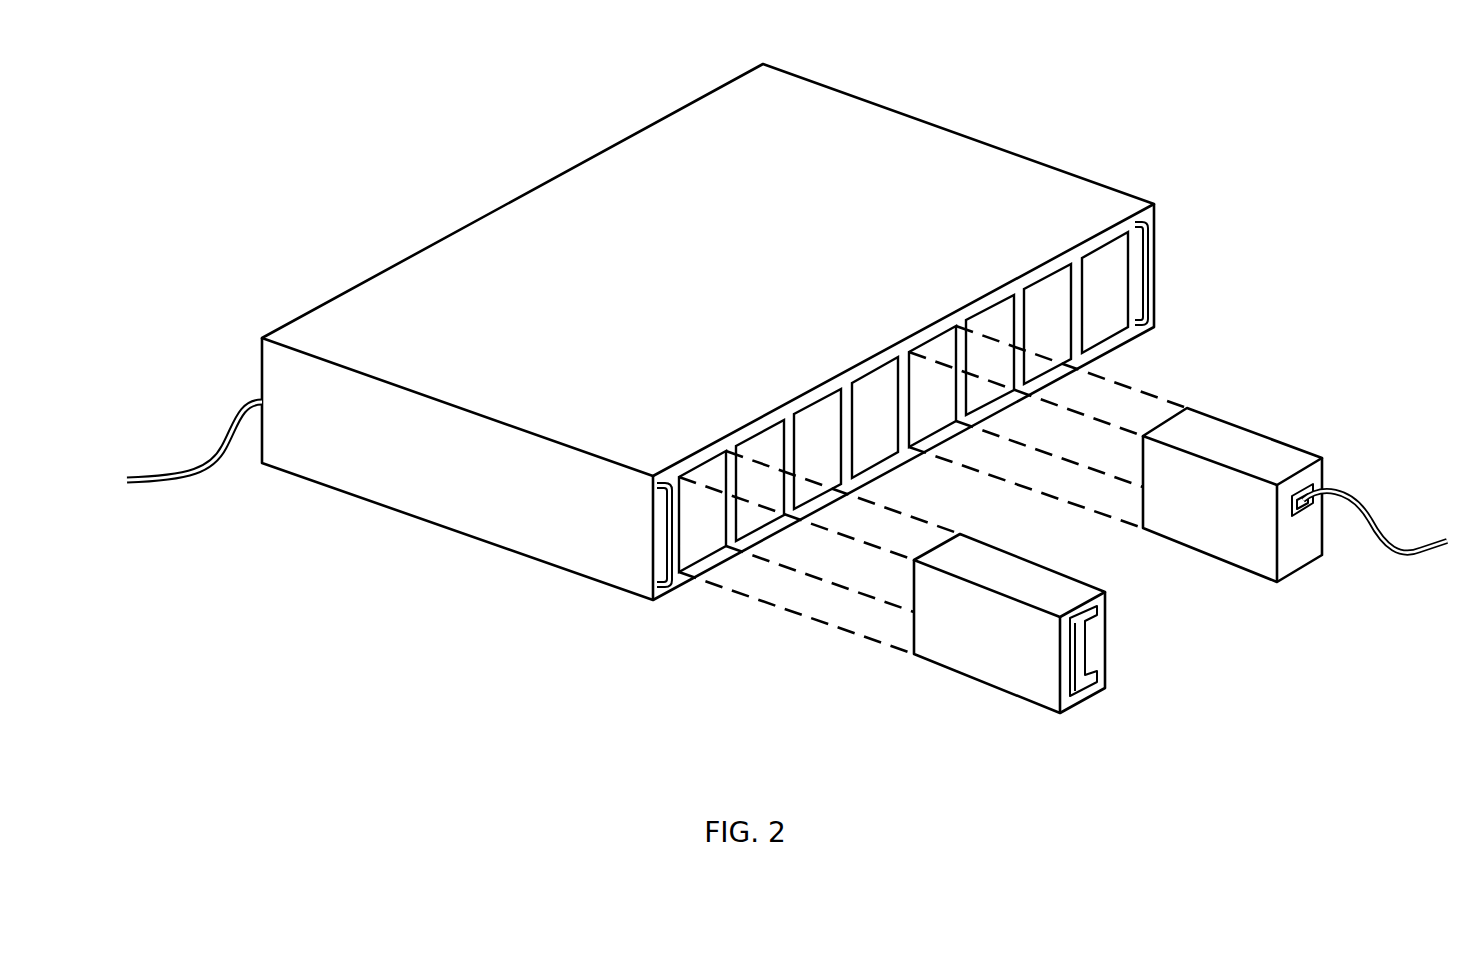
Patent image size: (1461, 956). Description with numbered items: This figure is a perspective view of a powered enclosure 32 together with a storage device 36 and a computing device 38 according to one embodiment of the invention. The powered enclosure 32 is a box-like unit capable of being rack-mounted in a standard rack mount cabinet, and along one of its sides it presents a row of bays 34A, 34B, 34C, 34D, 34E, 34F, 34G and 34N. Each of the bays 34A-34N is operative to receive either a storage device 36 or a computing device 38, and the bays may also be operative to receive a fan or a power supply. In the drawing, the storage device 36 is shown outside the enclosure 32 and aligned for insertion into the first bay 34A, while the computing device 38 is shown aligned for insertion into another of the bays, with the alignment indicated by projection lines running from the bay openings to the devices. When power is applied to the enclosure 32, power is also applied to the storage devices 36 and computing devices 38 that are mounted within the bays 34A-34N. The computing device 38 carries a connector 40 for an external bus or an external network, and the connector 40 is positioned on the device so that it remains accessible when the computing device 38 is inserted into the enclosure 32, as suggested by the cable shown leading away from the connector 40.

The powered enclosure 32 is at (882, 104).
The bay 34A is at (701, 460).
The bay 34B is at (777, 416).
The bay 34C is at (833, 384).
The bay 34D is at (891, 354).
The bay 34E is at (948, 321).
The bay 34F is at (1002, 292).
The bay 34G is at (1055, 264).
The bay 34N is at (1113, 237).
The storage device 36 is at (977, 683).
The computing device 38 is at (1295, 513).
The connector 40 is at (1306, 462).